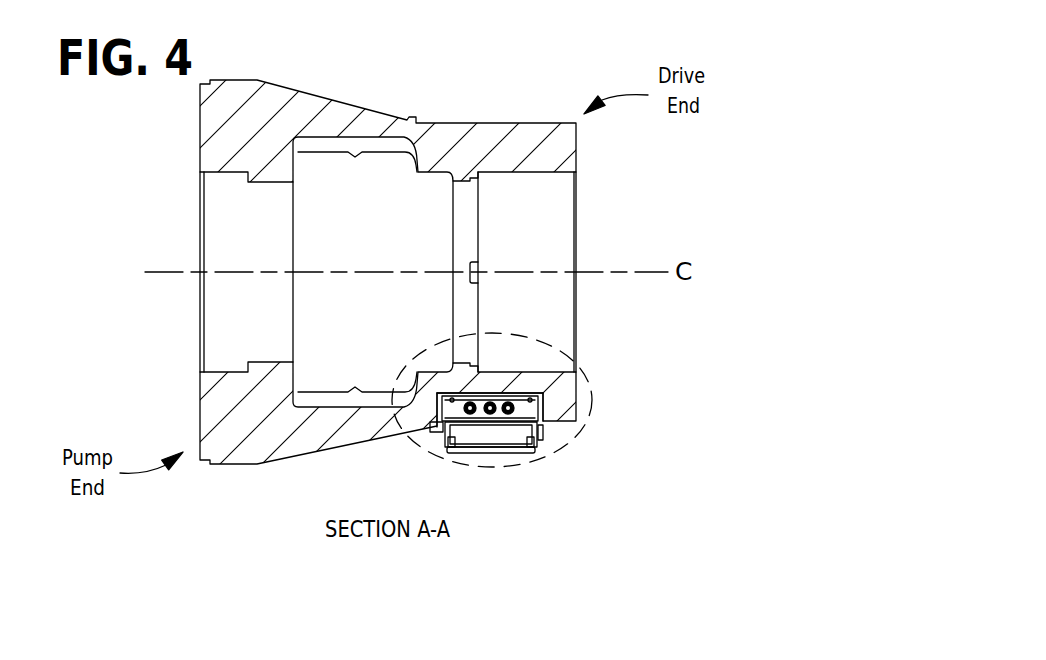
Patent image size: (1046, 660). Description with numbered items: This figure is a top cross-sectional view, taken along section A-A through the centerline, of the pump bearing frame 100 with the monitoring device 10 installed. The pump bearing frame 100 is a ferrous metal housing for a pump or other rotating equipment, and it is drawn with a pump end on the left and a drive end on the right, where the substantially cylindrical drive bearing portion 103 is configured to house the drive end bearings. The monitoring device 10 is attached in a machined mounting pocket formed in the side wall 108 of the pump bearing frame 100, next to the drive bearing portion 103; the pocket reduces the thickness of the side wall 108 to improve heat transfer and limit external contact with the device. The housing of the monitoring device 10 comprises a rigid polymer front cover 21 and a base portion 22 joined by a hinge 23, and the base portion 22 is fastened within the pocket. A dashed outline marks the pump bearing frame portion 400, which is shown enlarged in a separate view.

The pump bearing frame 100 is at (148, 144).
The drive bearing portion 103 is at (582, 210).
The side wall 108 is at (537, 372).
The base portion 22 is at (540, 412).
The front cover 21 is at (538, 440).
The hinge 23 is at (438, 425).
The monitoring device 10 is at (438, 470).
The pump bearing frame portion 400 is at (390, 405).